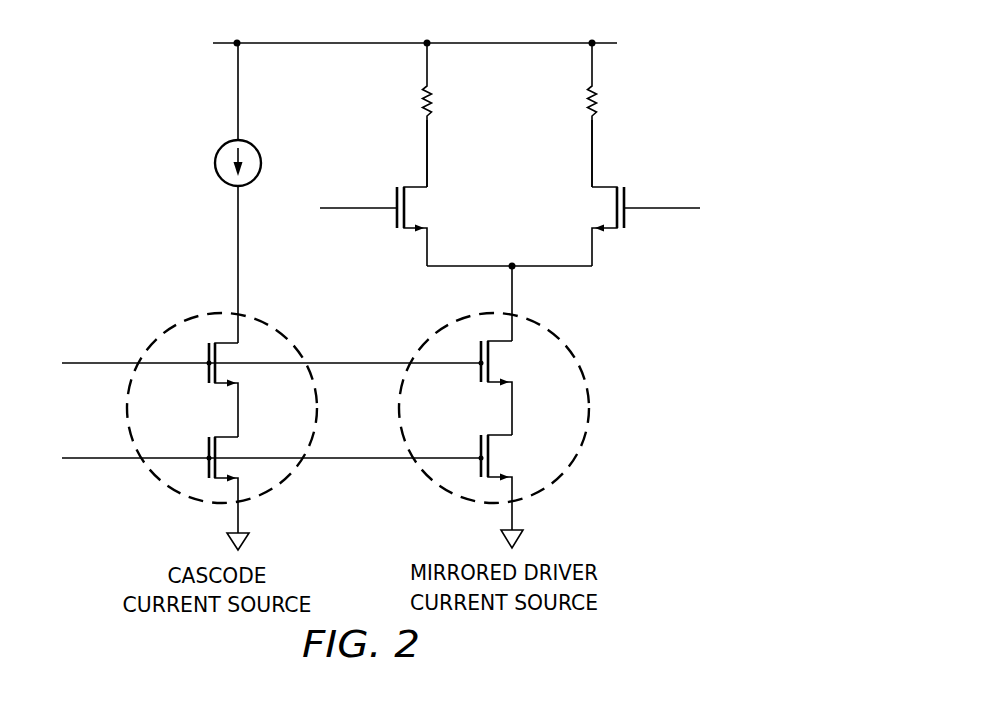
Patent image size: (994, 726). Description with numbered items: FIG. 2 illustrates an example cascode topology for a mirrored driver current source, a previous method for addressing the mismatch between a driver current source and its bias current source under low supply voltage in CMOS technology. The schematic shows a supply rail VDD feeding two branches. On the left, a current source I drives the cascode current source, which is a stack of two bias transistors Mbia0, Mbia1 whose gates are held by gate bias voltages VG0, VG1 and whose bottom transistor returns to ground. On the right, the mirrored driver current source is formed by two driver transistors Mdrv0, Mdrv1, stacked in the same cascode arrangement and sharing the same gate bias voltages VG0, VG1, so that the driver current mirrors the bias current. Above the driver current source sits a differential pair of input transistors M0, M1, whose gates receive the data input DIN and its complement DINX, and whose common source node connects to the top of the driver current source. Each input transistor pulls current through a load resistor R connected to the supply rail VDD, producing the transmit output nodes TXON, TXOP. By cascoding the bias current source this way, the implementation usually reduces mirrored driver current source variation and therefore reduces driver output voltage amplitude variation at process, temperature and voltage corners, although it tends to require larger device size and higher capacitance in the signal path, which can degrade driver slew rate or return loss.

The supply voltage rail VDD is at (415, 30).
The bias current source I is at (238, 193).
The load resistor R is at (519, 115).
The negative transmit output node TXON is at (457, 153).
The positive transmit output node TXOP is at (621, 153).
The first driver input transistor M0 is at (428, 226).
The second driver input transistor M1 is at (593, 226).
The data input DIN is at (358, 195).
The complementary data input DINX is at (662, 194).
The mirrored driver current source upper transistor Mdrv0 is at (516, 408).
The mirrored driver current source lower transistor Mdrv1 is at (556, 491).
The cascode current source upper transistor Mbia0 is at (243, 408).
The cascode current source lower transistor Mbia1 is at (284, 493).
The upper gate bias voltage VG0 is at (271, 351).
The lower gate bias voltage VG1 is at (271, 446).